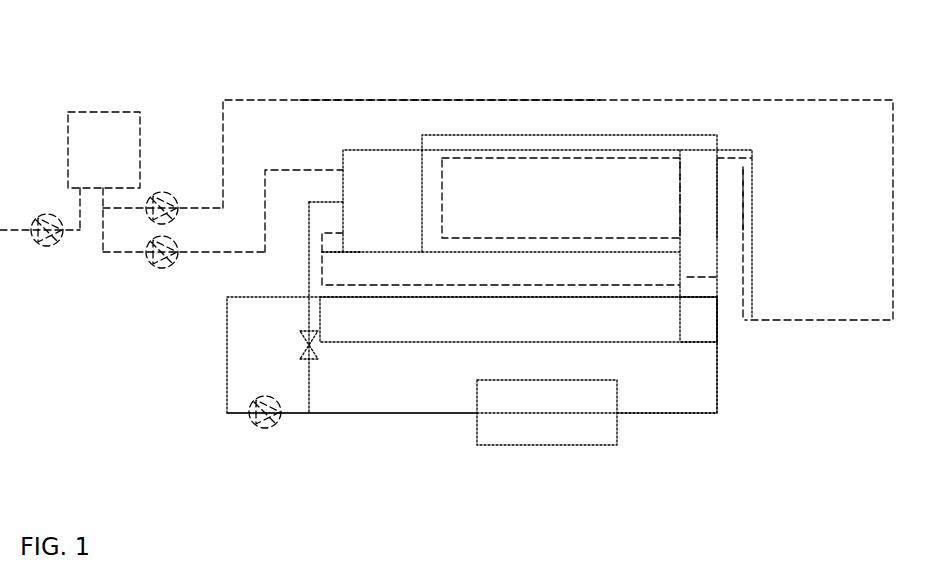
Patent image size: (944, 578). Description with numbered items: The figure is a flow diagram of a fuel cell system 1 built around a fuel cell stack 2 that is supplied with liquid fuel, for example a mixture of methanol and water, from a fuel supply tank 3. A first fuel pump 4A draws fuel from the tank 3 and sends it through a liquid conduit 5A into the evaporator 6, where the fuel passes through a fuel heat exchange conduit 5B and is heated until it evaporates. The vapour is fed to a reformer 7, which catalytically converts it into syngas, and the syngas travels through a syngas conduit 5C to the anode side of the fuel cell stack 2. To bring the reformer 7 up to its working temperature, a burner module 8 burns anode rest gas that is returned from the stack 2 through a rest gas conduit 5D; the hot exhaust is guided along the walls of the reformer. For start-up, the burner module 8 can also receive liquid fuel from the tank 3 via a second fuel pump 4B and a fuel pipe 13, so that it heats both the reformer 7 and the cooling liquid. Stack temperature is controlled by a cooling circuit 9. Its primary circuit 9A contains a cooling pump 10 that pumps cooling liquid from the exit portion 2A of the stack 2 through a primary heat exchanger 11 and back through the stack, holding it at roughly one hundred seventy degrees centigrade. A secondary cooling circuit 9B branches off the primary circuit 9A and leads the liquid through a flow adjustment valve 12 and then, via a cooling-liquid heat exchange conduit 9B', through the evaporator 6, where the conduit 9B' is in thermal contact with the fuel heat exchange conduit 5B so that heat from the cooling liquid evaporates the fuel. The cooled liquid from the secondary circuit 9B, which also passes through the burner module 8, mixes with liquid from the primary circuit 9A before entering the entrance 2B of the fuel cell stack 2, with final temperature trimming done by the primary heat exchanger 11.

The fuel cell system 1 is at (312, 65).
The fuel supply tank 3 is at (111, 165).
The first fuel pump 4A is at (168, 192).
The second fuel pump 4B is at (160, 270).
The fuel pipe 13 is at (300, 168).
The liquid conduit 5A is at (460, 100).
The fuel heat exchange conduit 5B is at (750, 199).
The syngas conduit 5C is at (720, 277).
The rest gas conduit 5D is at (320, 252).
The secondary cooling circuit 9B is at (513, 215).
The cooling-liquid heat exchange conduit 9B' is at (780, 191).
The burner module 8 is at (400, 198).
The reformer 7 is at (522, 198).
The evaporator 6 is at (737, 256).
The fuel cell stack 2 is at (517, 281).
The exit portion 2A is at (332, 304).
The entrance 2B is at (690, 312).
The cooling circuit 9 is at (200, 386).
The primary circuit 9A is at (352, 413).
The cooling pump 10 is at (268, 432).
The primary heat exchanger 11 is at (541, 408).
The flow adjustment valve 12 is at (300, 343).